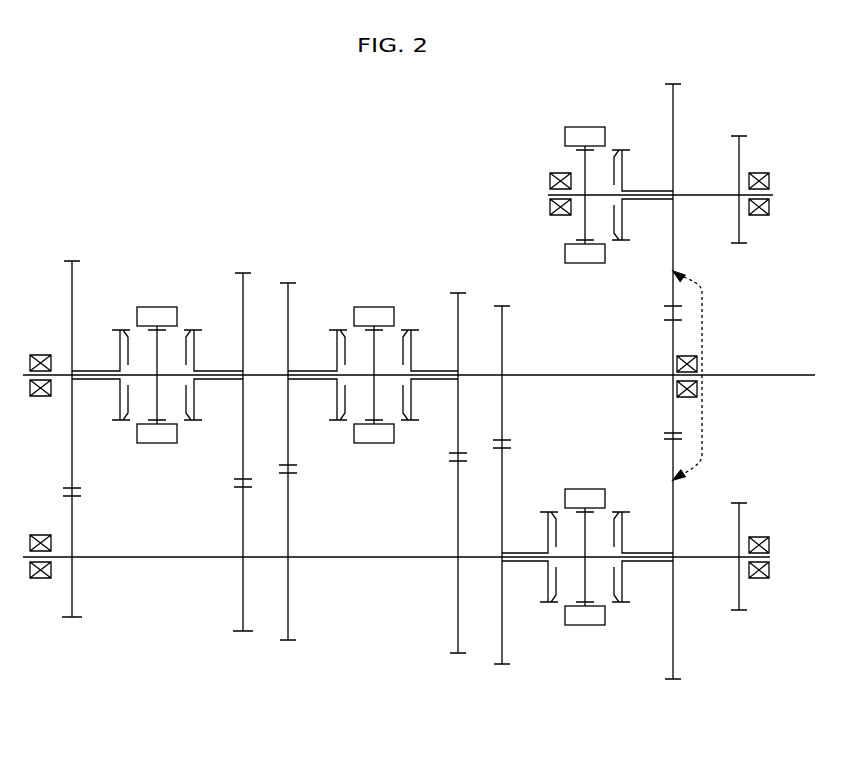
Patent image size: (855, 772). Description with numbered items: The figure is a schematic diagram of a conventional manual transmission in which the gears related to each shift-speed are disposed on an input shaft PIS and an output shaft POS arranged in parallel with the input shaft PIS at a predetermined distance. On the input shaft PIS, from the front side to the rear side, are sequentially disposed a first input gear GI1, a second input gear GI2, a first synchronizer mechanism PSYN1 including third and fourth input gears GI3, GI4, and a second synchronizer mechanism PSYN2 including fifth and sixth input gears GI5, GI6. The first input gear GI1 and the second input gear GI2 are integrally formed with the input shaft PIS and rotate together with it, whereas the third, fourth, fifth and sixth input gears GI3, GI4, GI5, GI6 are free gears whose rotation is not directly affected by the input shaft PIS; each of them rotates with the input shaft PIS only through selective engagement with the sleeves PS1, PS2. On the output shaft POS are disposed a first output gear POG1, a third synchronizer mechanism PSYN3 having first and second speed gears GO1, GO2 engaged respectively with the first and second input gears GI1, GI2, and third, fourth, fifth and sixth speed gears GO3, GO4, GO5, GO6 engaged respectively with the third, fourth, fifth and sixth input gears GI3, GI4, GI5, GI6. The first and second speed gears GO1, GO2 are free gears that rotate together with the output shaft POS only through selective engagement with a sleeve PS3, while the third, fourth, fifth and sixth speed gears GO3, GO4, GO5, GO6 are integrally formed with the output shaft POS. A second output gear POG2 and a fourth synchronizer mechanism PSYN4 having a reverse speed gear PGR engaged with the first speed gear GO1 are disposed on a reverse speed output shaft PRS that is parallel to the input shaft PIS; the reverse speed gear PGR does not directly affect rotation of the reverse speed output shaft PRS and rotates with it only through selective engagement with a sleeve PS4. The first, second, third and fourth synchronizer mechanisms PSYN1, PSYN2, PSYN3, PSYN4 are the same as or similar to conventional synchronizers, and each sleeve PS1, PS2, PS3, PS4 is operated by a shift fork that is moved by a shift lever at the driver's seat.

The input shaft PIS is at (575, 374).
The output shaft POS is at (378, 559).
The reverse speed output shaft PRS is at (703, 194).
The first input gear GI1 is at (672, 333).
The second input gear GI2 is at (503, 320).
The third input gear GI3 is at (460, 308).
The fourth input gear GI4 is at (290, 300).
The fifth input gear GI5 is at (245, 290).
The sixth input gear GI6 is at (74, 278).
The first speed gear GO1 is at (675, 636).
The second speed gear GO2 is at (505, 667).
The third speed gear GO3 is at (462, 656).
The fourth speed gear GO4 is at (290, 641).
The fifth speed gear GO5 is at (246, 633).
The sixth speed gear GO6 is at (76, 619).
The sleeve PS1 is at (374, 306).
The sleeve PS2 is at (157, 306).
The sleeve PS3 is at (585, 628).
The sleeve PS4 is at (585, 126).
The first synchronizer mechanism PSYN1 is at (388, 245).
The second synchronizer mechanism PSYN2 is at (182, 245).
The third synchronizer mechanism PSYN3 is at (622, 648).
The fourth synchronizer mechanism PSYN4 is at (618, 112).
The reverse speed gear PGR is at (674, 100).
The first output gear POG1 is at (741, 518).
The second output gear POG2 is at (741, 152).